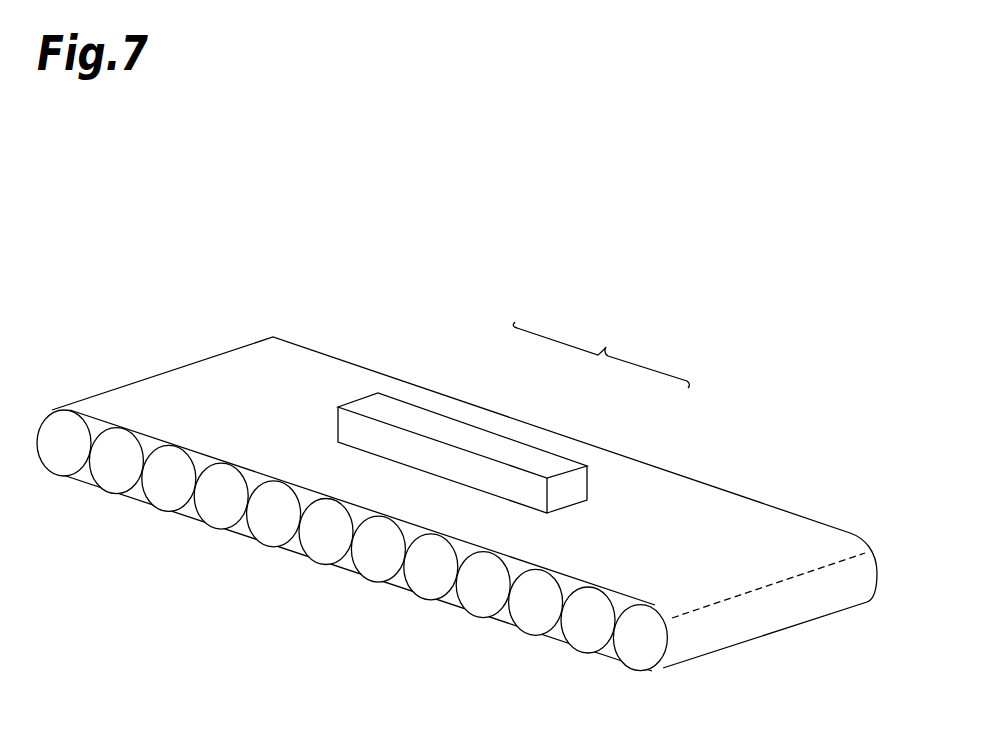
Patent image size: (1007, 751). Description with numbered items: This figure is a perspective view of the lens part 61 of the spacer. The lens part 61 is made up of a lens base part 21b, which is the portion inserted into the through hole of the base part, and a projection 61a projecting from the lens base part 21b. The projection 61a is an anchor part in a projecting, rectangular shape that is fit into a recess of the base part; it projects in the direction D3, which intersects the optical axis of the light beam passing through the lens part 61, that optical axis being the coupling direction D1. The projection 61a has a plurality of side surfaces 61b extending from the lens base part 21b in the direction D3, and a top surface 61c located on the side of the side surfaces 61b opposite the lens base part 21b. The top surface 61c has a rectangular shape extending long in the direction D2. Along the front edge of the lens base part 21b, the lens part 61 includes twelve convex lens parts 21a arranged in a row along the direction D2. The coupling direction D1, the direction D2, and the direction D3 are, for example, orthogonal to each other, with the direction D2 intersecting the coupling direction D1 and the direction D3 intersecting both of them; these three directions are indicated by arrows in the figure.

The lens part 61 is at (531, 366).
The projection 61a is at (601, 349).
The side surface 61b is at (503, 483).
The top surface 61c is at (463, 440).
The convex lens part 21a is at (68, 453).
The lens base part 21b is at (695, 527).
The coupling direction D1 is at (812, 639).
The direction D2 is at (568, 670).
The direction D3 is at (902, 550).